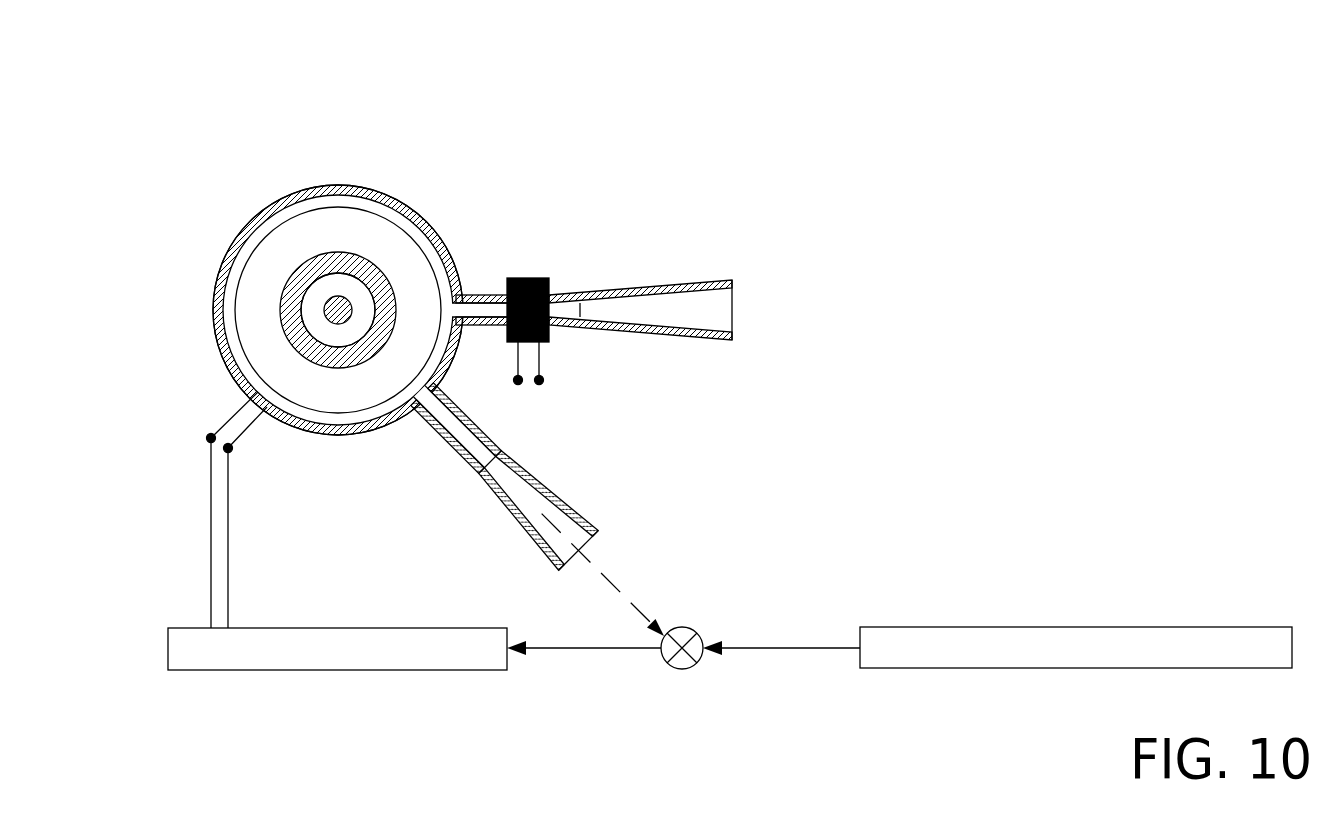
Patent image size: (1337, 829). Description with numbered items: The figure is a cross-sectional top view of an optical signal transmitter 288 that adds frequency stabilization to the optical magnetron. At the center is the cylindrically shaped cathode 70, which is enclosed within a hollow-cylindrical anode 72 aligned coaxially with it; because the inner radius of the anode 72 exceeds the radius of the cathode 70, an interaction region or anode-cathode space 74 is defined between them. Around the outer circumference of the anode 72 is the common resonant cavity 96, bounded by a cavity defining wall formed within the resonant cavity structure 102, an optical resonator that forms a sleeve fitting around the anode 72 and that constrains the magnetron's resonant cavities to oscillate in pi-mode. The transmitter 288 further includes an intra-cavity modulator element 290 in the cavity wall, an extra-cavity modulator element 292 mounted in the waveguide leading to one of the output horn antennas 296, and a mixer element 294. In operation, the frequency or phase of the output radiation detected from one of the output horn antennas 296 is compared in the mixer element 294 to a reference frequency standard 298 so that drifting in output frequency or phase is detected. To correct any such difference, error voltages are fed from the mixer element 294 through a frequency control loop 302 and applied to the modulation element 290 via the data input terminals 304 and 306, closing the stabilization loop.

The optical signal transmitter 288 is at (216, 120).
The resonant cavity structure 102 is at (277, 205).
The intra-cavity modulator element 290 is at (352, 197).
The common resonant cavity 96 is at (378, 243).
The anode-cathode space 74 is at (313, 312).
The anode 72 is at (293, 332).
The cathode 70 is at (327, 320).
The output horn antenna 296 is at (680, 285).
The extra-cavity modulator element 292 is at (553, 288).
The data input terminal 304 is at (217, 416).
The data input terminal 306 is at (248, 428).
The frequency control loop 302 is at (304, 628).
The mixer element 294 is at (689, 616).
The reference frequency standard 298 is at (985, 627).